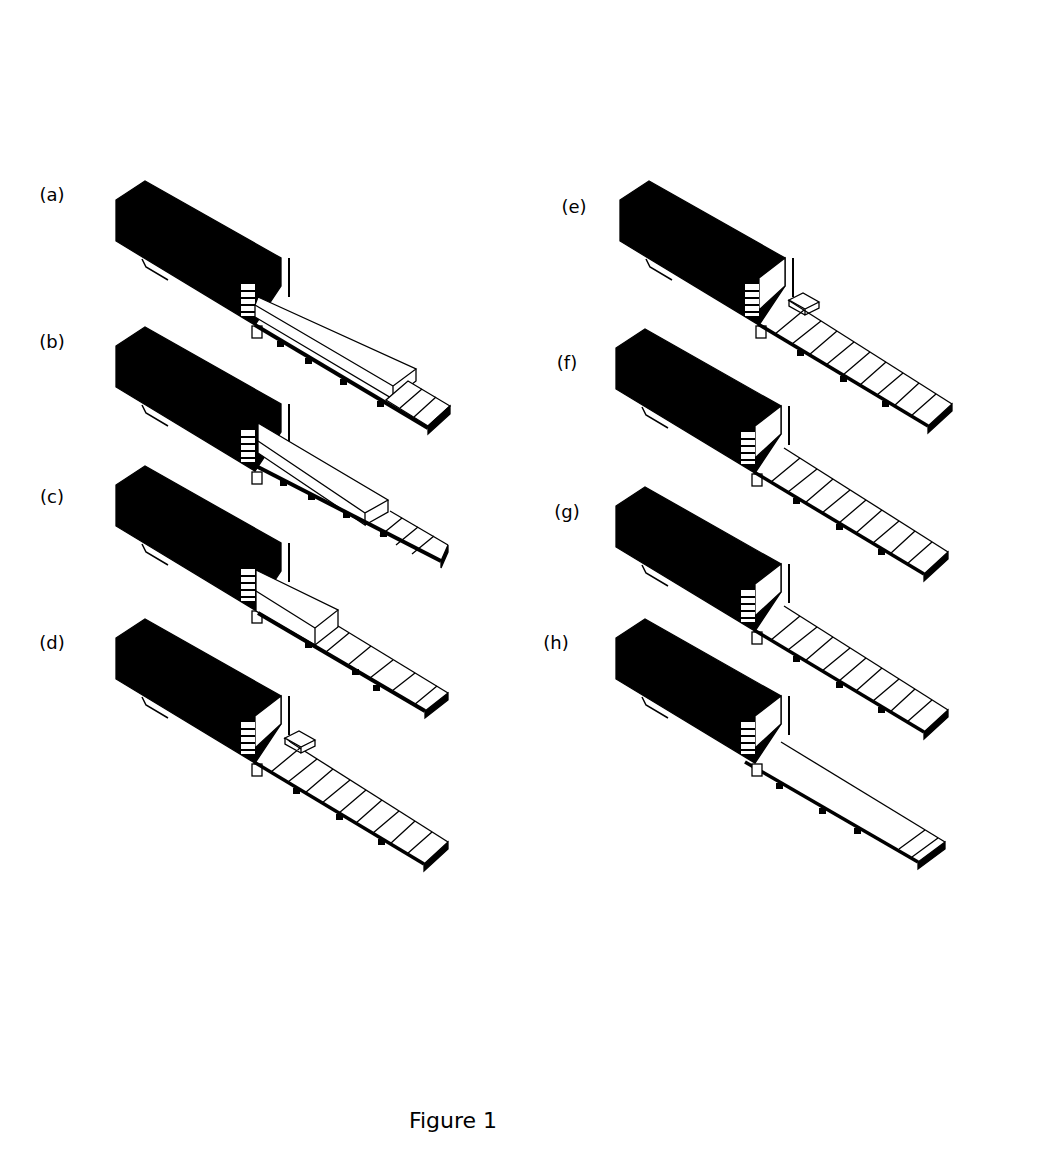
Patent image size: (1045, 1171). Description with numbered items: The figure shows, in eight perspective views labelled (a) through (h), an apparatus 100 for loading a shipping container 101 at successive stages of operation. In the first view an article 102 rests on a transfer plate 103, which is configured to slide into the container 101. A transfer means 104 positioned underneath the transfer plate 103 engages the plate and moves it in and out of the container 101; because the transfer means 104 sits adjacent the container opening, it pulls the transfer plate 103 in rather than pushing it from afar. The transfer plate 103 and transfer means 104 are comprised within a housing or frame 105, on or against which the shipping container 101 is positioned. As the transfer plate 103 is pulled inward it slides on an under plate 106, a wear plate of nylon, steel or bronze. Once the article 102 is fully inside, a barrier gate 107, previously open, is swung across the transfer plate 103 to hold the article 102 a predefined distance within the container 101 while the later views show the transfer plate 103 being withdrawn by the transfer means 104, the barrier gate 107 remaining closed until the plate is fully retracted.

The apparatus 100 is at (395, 128).
The shipping container 101 is at (160, 165).
The article 102 is at (311, 300).
The transfer plate 103 is at (421, 378).
The transfer means 104 is at (298, 348).
The frame 105 is at (440, 702).
The under plate 106 is at (378, 833).
The barrier gate 107 is at (306, 742).